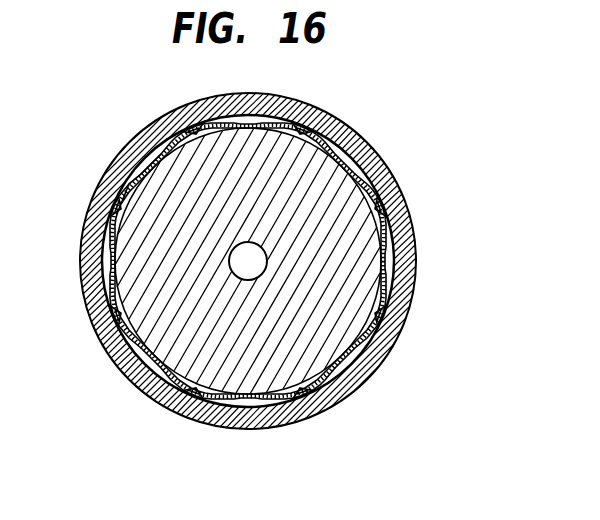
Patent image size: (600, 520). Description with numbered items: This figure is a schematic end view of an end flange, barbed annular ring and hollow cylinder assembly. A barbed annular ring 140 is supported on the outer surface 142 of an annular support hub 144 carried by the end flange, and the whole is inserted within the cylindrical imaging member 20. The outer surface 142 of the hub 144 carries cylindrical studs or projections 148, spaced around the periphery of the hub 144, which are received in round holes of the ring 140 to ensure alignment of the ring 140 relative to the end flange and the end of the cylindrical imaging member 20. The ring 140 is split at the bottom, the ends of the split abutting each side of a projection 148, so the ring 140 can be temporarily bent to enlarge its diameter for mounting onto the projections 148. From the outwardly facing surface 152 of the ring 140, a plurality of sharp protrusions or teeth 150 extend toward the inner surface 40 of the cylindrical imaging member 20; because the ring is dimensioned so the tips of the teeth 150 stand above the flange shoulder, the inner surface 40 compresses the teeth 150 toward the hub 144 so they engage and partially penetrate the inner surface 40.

The cylindrical imaging member 20 is at (156, 117).
The inner surface 40 is at (142, 168).
The barbed annular ring 140 is at (475, 173).
The outer surface 142 is at (325, 318).
The annular support hub 144 is at (372, 345).
The projections 148 is at (380, 255).
The sharp protrusions 150 is at (322, 115).
The outwardly facing surface 152 is at (395, 290).